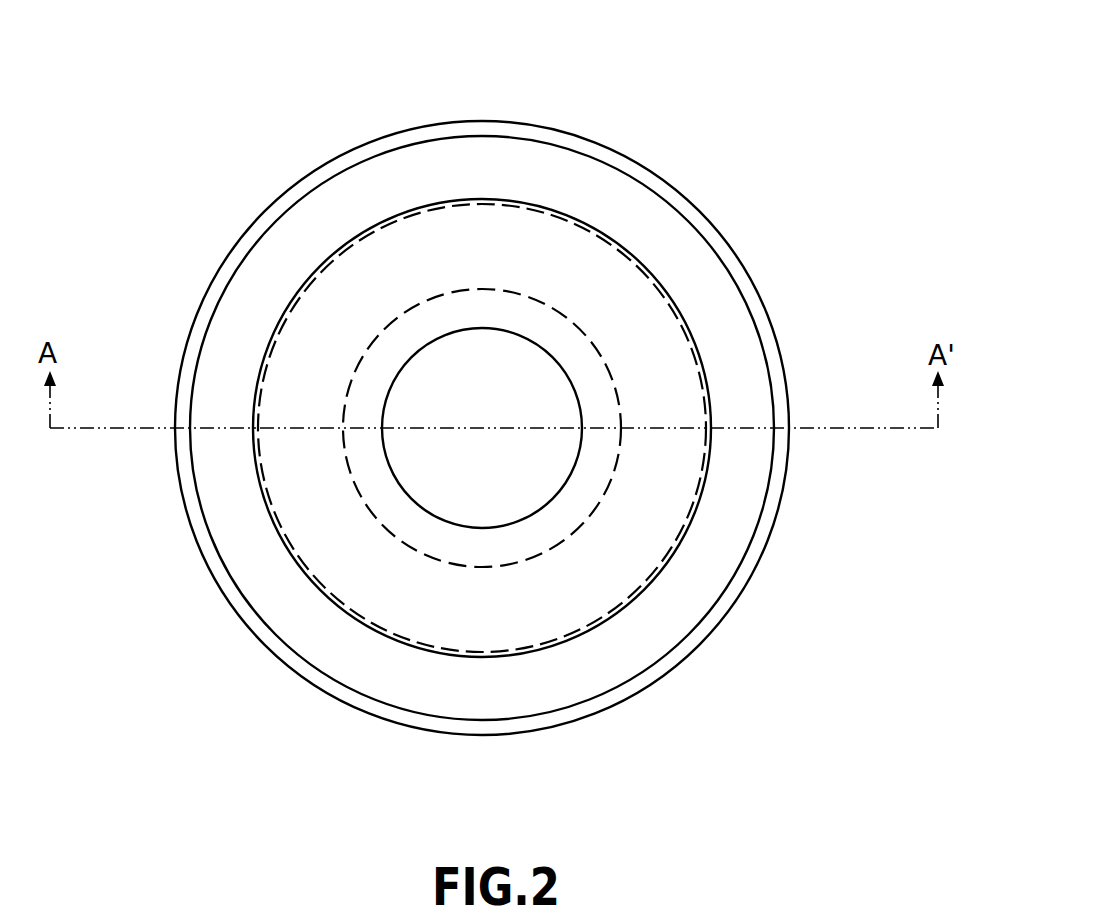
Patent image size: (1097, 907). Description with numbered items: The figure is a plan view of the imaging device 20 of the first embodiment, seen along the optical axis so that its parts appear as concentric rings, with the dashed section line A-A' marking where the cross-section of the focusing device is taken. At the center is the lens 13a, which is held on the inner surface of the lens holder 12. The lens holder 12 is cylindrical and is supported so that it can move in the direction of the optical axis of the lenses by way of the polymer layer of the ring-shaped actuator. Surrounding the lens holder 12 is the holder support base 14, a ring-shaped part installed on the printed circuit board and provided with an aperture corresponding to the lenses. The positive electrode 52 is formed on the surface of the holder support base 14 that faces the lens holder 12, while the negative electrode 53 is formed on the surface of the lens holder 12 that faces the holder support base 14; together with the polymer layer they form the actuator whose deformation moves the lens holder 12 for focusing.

The imaging device 20 is at (858, 88).
The holder support base 14 is at (773, 380).
The positive electrode 52 is at (737, 340).
The lens holder 12 is at (560, 335).
The negative electrode 53 is at (642, 330).
The lens 13a is at (466, 357).